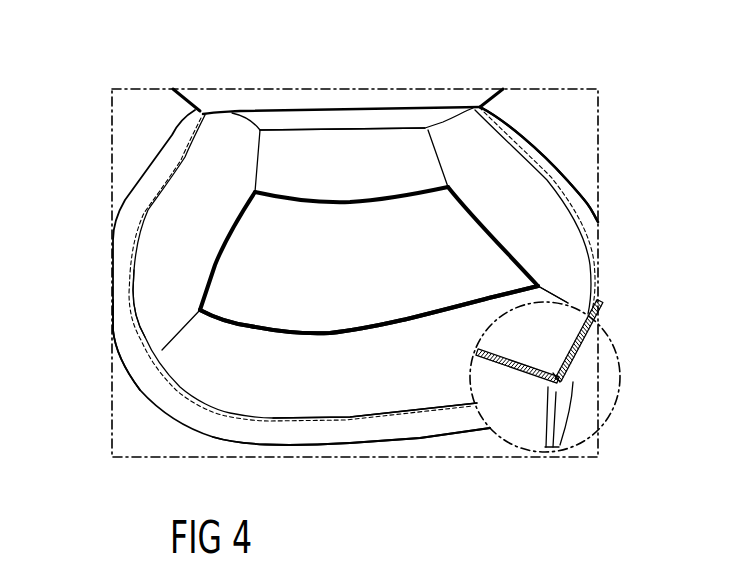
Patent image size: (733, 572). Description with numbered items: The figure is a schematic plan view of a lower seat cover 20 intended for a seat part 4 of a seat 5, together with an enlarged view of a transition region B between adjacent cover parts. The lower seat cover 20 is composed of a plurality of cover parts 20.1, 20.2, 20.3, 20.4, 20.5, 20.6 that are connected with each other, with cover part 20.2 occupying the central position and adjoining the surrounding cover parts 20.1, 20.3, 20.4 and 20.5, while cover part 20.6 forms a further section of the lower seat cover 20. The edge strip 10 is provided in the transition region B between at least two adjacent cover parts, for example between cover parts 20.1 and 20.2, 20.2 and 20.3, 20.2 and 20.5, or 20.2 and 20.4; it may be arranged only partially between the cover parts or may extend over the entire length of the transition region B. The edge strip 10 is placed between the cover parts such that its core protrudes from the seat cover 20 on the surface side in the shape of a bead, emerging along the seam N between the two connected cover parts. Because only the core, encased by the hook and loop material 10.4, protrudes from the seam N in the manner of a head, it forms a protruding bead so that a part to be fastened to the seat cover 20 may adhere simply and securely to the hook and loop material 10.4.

The seat 5 is at (144, 100).
The seat part 4 is at (128, 240).
The lower seat cover 20 is at (520, 176).
The cover part 20.1 is at (567, 238).
The cover part 20.2 is at (576, 318).
The cover part 20.3 is at (387, 142).
The cover part 20.4 is at (270, 403).
The cover part 20.5 is at (130, 278).
The cover part 20.6 is at (128, 339).
The edge strip 10 is at (232, 231).
The hook and loop material 10.4 is at (523, 373).
The seam N is at (558, 448).
The transition region B is at (630, 366).